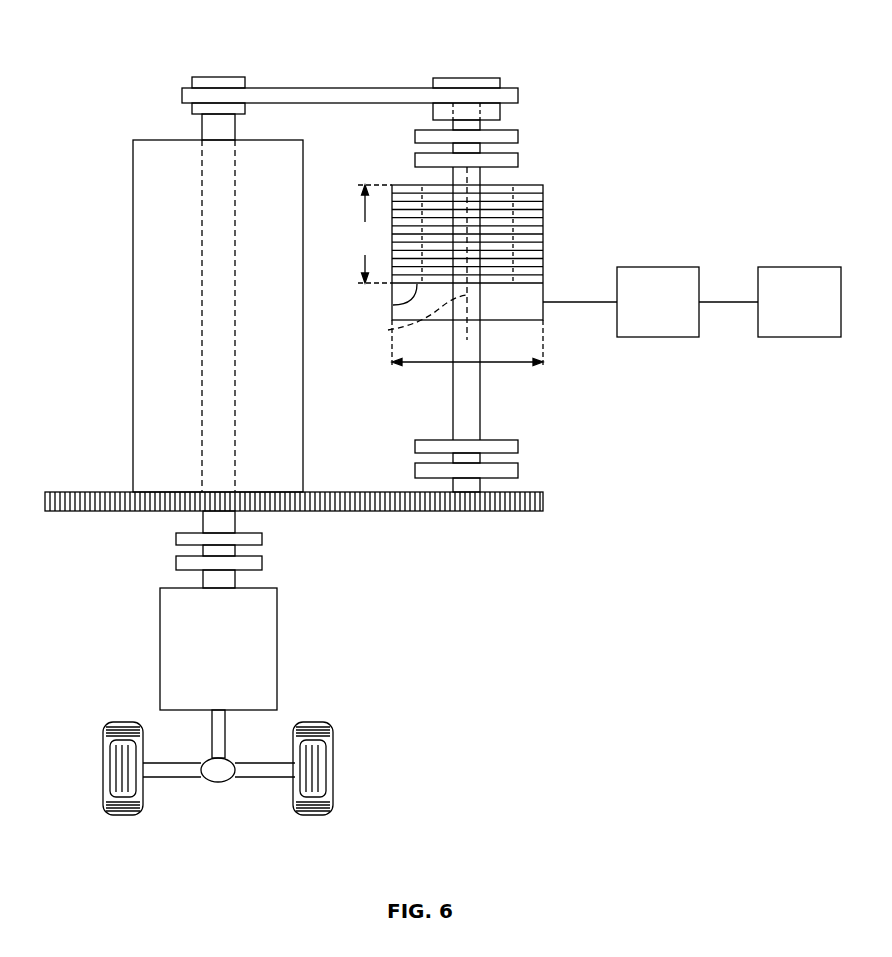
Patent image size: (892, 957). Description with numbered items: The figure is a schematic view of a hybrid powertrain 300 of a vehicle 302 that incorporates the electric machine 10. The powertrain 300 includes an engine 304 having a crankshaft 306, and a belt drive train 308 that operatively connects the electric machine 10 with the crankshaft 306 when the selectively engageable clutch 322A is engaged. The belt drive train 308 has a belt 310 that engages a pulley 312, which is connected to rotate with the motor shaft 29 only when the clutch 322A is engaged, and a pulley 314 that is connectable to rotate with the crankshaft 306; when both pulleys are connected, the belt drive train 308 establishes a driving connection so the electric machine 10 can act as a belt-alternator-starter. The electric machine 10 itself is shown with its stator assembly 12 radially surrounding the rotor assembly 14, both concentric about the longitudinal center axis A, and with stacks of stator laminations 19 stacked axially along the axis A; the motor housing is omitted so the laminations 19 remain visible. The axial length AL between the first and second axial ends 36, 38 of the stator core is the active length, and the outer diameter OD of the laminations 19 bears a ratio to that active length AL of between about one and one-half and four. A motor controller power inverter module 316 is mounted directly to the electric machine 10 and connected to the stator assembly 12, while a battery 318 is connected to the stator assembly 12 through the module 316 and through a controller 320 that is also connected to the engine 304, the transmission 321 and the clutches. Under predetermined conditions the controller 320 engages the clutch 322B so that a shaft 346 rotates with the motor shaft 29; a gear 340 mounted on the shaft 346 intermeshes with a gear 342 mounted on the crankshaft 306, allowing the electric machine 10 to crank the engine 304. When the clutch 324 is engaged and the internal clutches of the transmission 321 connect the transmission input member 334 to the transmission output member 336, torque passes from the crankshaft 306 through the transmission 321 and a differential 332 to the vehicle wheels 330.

The powertrain 300 is at (570, 40).
The belt drive train 308 is at (380, 51).
The belt 310 is at (300, 88).
The pulley 314 is at (220, 77).
The pulley 312 is at (467, 78).
The vehicle 302 is at (106, 250).
The engine 304 is at (133, 335).
The crankshaft 306 is at (200, 128).
The selectively engageable clutch 322A is at (404, 142).
The motor shaft 29 is at (453, 181).
The electric machine 10 is at (617, 224).
The stator assembly 12 is at (537, 213).
The rotor assembly 14 is at (520, 203).
The stator laminations 19 is at (537, 283).
The first axial end 36 is at (537, 184).
The second axial end 38 is at (393, 305).
The longitudinal center axis A is at (414, 318).
The motor controller power inverter module 316 is at (543, 322).
The axial length AL is at (372, 234).
The outer diameter OD is at (540, 365).
The controller 320 is at (650, 302).
The battery 318 is at (799, 302).
The clutch 322B is at (531, 455).
The shaft 346 is at (480, 485).
The gear 340 is at (525, 511).
The gear 342 is at (83, 512).
The clutch 324 is at (268, 548).
The transmission input member 334 is at (235, 583).
The transmission 321 is at (218, 649).
The transmission output member 336 is at (225, 740).
The differential 332 is at (212, 783).
The vehicle wheels 330 is at (104, 770).